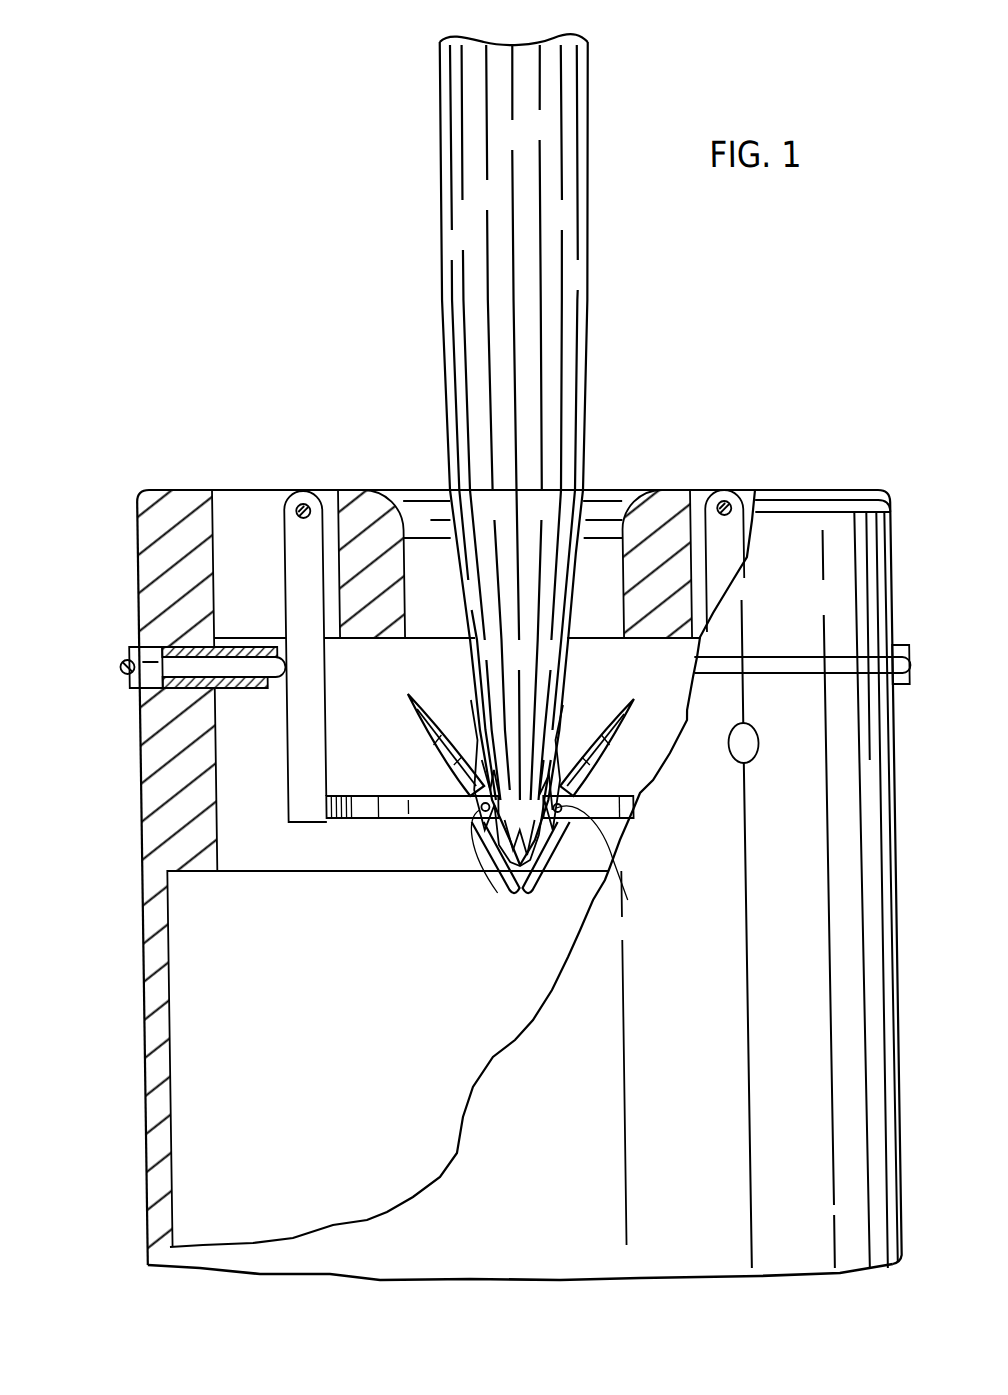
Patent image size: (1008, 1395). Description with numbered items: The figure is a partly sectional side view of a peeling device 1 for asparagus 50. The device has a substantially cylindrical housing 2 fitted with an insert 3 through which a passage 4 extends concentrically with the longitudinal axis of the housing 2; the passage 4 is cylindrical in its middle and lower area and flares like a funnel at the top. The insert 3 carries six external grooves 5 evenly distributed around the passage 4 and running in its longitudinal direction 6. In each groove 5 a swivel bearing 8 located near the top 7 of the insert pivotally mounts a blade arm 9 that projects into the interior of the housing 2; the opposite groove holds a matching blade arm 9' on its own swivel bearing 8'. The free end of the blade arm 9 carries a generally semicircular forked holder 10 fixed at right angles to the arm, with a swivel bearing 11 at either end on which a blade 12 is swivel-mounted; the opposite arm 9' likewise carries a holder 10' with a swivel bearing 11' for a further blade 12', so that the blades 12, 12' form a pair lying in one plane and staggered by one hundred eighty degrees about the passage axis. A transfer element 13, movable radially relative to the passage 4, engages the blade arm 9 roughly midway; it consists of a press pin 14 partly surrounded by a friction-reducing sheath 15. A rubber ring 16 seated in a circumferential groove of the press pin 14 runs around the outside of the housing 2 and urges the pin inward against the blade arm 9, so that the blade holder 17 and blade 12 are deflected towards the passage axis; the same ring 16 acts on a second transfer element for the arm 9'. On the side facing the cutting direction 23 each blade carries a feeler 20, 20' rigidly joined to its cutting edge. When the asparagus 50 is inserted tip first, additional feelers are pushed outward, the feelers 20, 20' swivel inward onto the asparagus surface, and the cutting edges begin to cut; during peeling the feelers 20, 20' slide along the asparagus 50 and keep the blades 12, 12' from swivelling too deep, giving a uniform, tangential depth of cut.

The peeling device 1 is at (672, 414).
The housing 2 is at (146, 791).
The insert 3 is at (257, 475).
The passage 4 is at (598, 555).
The external groove 5 is at (225, 532).
The longitudinal direction 6 is at (99, 913).
The top of the insert 7 is at (413, 487).
The swivel bearing 8 is at (288, 473).
The swivel bearing 8' is at (739, 470).
The blade arm 9 is at (327, 656).
The blade arm 9' is at (748, 561).
The forked holder 10 is at (413, 861).
The holder 10' is at (620, 820).
The swivel bearing 11 is at (482, 874).
The swivel bearing 11' is at (602, 862).
The blade 12 is at (420, 801).
The blade 12' is at (642, 807).
The transfer element 13 is at (114, 637).
The press pin 14 is at (268, 655).
The sheath 15 is at (233, 684).
The rubber ring 16 is at (118, 668).
The blade holder 17 is at (319, 836).
The feeler 20 is at (445, 724).
The feeler 20' is at (596, 724).
The cutting direction 23 is at (96, 1127).
The asparagus 50 is at (462, 173).